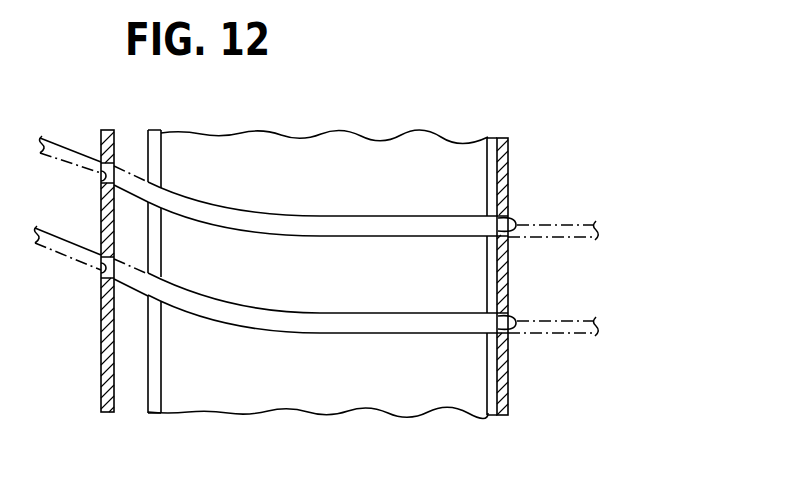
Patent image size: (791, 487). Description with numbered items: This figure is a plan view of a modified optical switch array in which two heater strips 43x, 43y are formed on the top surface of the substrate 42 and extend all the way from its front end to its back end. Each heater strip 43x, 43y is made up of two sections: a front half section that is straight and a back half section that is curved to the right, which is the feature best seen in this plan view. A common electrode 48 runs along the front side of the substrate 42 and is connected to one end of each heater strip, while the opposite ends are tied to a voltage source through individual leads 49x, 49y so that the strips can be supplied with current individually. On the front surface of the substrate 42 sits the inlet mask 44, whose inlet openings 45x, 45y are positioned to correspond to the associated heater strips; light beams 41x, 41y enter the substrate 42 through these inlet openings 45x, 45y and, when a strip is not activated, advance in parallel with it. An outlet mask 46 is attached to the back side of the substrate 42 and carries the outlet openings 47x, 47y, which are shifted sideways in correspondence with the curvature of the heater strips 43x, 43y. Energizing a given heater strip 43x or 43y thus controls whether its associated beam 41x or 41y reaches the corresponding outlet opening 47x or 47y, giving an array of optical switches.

The light beam 41x is at (560, 318).
The light beam 41y is at (584, 220).
The substrate 42 is at (421, 152).
The heater strip 43x is at (325, 312).
The heater strip 43y is at (325, 213).
The inlet mask 44 is at (508, 158).
The inlet opening 45x is at (516, 320).
The inlet opening 45y is at (516, 224).
The outlet mask 46 is at (101, 364).
The outlet opening 47x is at (100, 268).
The outlet opening 47y is at (100, 176).
The common electrode 48 is at (486, 283).
The lead 49x is at (155, 352).
The lead 49y is at (157, 163).